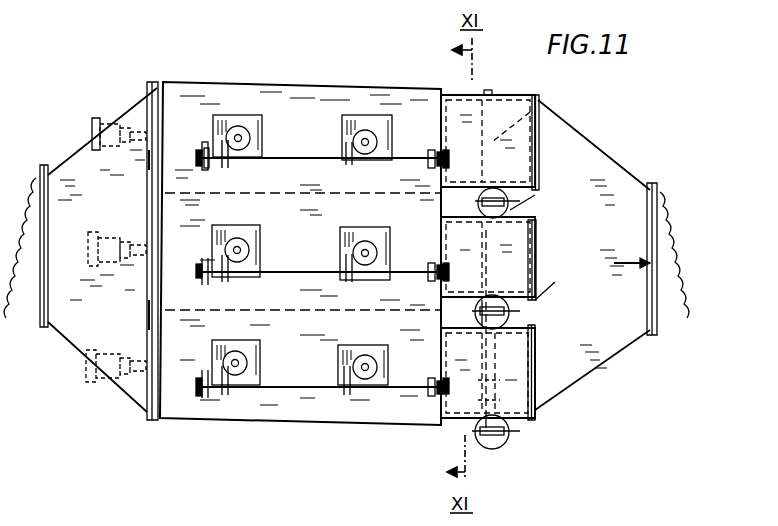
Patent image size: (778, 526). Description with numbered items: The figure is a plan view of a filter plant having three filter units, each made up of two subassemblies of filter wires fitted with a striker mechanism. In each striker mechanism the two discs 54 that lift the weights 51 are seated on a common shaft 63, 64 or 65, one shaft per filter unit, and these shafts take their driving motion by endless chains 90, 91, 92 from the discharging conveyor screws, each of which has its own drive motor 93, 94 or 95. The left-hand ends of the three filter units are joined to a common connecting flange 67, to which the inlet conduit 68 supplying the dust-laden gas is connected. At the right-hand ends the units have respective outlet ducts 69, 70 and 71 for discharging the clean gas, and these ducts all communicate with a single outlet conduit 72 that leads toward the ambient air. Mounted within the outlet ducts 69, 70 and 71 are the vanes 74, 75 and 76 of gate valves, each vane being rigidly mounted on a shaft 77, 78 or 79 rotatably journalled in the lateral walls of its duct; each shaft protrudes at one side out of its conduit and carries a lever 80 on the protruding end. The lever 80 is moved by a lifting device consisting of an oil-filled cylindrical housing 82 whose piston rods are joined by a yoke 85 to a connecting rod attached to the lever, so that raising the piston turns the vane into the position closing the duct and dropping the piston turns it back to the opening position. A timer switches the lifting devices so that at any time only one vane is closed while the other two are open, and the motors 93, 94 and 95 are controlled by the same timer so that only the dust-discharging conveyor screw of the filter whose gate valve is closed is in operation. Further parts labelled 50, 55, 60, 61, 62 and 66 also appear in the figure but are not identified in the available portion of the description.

The bearing block 50 is at (250, 132).
The weight 51 is at (237, 130).
The disc 54 is at (215, 168).
The support plate 55 is at (230, 150).
The lower shaft assembly 60 is at (275, 390).
The middle shaft assembly 61 is at (256, 244).
The housing 62 is at (303, 84).
The common shaft 63 is at (322, 390).
The common shaft 64 is at (320, 271).
The common shaft 65 is at (322, 157).
The bearing 66 is at (207, 150).
The common connecting flange 67 is at (153, 82).
The inlet conduit 68 is at (42, 322).
The outlet duct 69 is at (510, 320).
The outlet duct 70 is at (510, 200).
The outlet duct 71 is at (450, 95).
The outlet conduit 72 is at (655, 185).
The vane 74 is at (492, 380).
The vane 75 is at (537, 256).
The vane 76 is at (540, 104).
The shaft 77 is at (492, 401).
The shaft 78 is at (537, 236).
The shaft 79 is at (542, 112).
The lever 80 is at (537, 287).
The cylindrical housing 82 is at (485, 316).
The yoke 85 is at (503, 322).
The endless chain 90 is at (450, 385).
The endless chain 91 is at (452, 286).
The endless chain 92 is at (450, 172).
The drive motor 93 is at (107, 348).
The drive motor 94 is at (107, 230).
The drive motor 95 is at (104, 122).